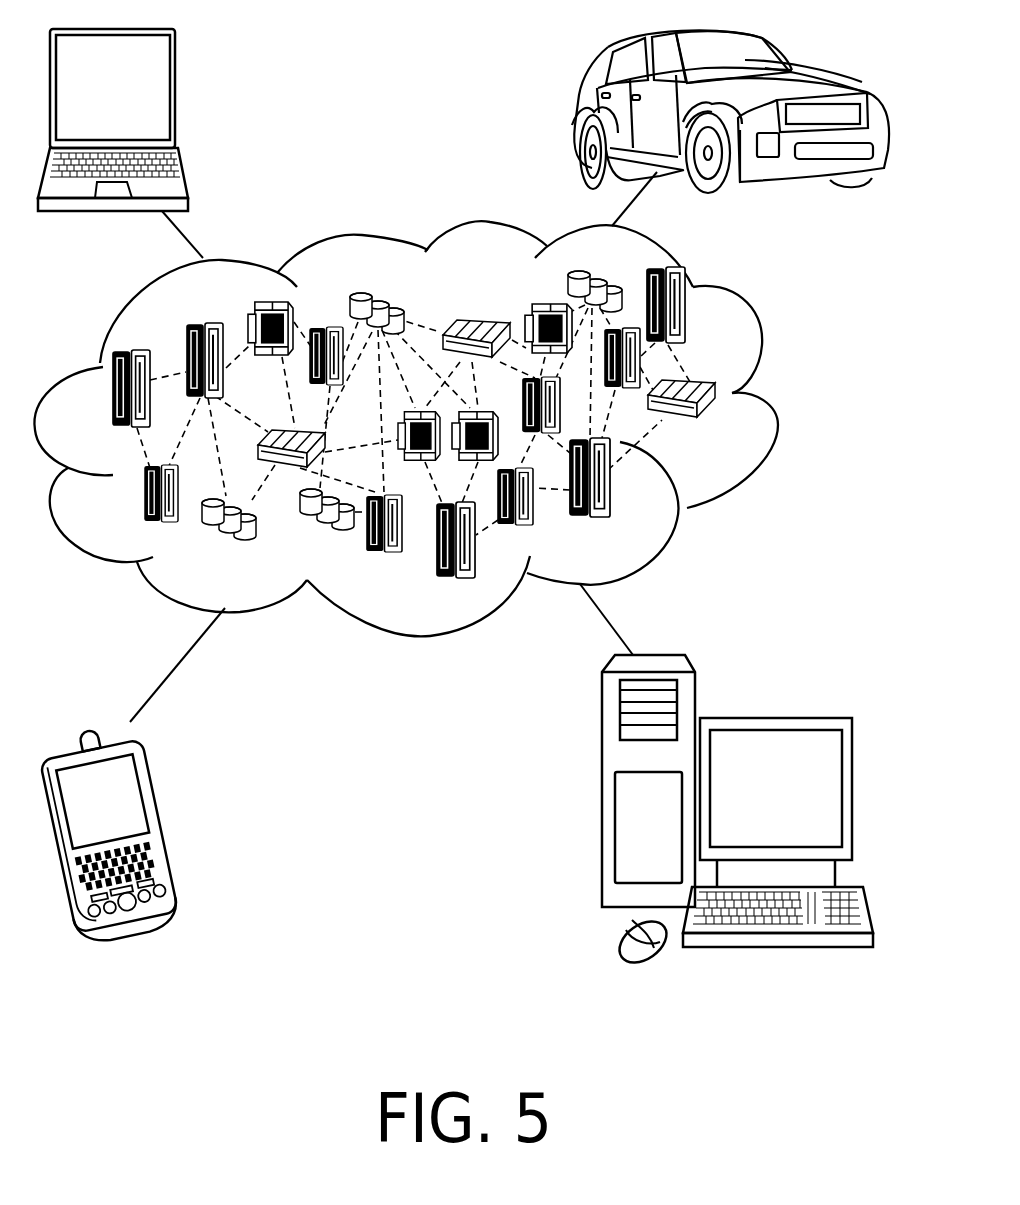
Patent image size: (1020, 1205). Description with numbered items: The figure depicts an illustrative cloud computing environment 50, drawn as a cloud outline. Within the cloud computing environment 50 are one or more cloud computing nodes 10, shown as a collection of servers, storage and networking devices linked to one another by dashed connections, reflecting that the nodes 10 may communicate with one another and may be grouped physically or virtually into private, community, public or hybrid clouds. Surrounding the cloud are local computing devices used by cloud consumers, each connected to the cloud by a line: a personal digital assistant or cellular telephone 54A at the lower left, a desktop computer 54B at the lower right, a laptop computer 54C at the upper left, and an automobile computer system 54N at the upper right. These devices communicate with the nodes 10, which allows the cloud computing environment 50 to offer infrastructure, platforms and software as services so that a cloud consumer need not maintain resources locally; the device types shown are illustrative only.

The cloud computing node 10 is at (729, 436).
The cloud computing environment 50 is at (776, 400).
The personal digital assistant or cellular telephone 54A is at (166, 816).
The desktop computer 54B is at (774, 718).
The laptop computer 54C is at (176, 96).
The automobile computer system 54N is at (577, 112).